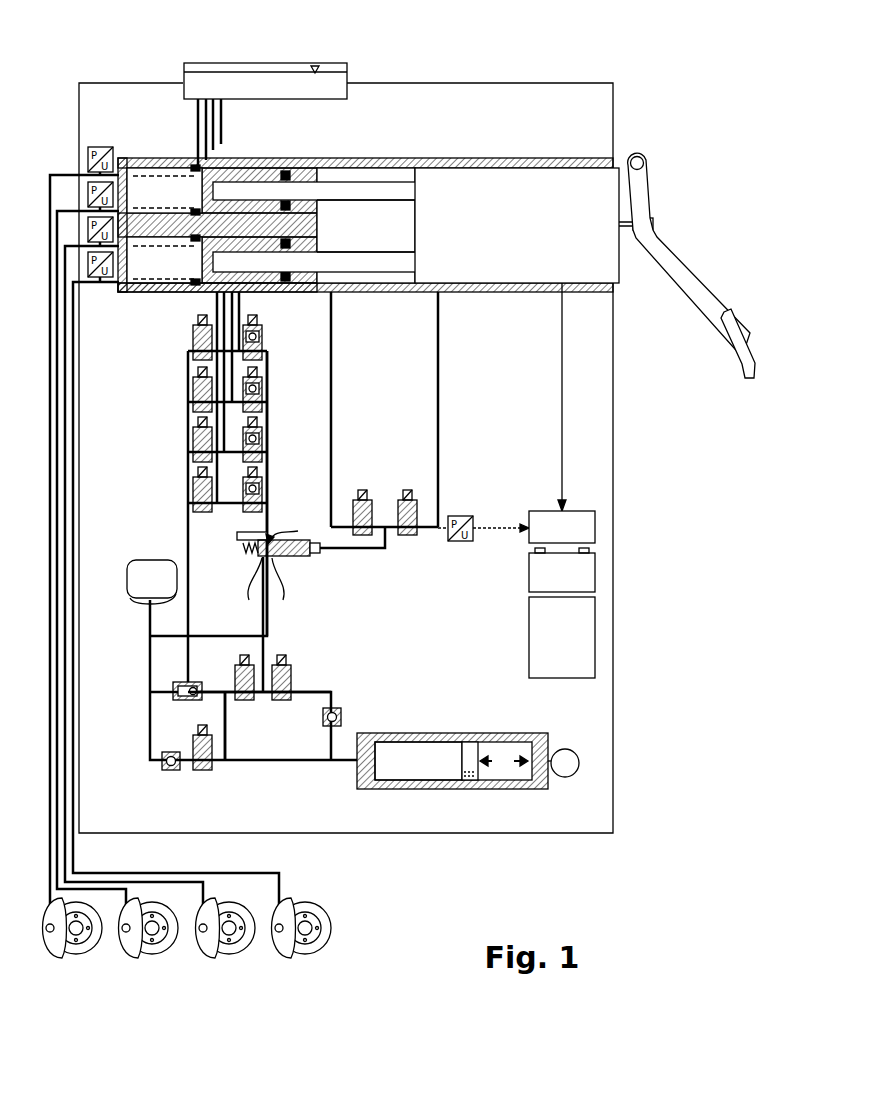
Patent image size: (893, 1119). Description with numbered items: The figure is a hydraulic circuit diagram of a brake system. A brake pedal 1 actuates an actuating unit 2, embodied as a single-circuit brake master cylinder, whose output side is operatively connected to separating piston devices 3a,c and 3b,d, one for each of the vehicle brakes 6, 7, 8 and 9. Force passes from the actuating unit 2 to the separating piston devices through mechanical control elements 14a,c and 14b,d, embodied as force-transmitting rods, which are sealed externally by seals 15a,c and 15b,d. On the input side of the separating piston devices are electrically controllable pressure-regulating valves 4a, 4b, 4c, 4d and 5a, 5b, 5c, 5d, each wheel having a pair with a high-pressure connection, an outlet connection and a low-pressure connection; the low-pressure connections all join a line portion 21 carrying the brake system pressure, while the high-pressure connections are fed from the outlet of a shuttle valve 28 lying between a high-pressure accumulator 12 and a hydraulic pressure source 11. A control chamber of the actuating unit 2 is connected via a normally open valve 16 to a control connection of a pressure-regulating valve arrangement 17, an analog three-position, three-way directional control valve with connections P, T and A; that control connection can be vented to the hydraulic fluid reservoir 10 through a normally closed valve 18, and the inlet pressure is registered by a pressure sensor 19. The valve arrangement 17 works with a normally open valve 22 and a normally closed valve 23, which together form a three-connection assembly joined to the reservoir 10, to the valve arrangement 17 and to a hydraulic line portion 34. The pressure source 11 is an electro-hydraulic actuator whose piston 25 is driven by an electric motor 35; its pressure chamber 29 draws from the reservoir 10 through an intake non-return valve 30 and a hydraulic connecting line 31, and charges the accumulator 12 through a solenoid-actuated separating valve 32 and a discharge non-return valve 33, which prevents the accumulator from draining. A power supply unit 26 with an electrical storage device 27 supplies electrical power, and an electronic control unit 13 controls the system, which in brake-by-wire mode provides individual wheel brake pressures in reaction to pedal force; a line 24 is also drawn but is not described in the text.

The brake pedal 1 is at (676, 270).
The actuating unit 2 is at (523, 195).
The separating piston devices 3a,c is at (244, 150).
The separating piston devices 3b,d is at (243, 300).
The pressure-regulating valve 4a is at (192, 351).
The pressure-regulating valve 4b is at (192, 401).
The pressure-regulating valve 4c is at (192, 451).
The pressure-regulating valve 4d is at (192, 502).
The pressure-regulating valve 5a is at (263, 351).
The pressure-regulating valve 5b is at (263, 401).
The pressure-regulating valve 5c is at (263, 451).
The pressure-regulating valve 5d is at (263, 502).
The vehicle brake 6 is at (53, 958).
The vehicle brake 7 is at (129, 958).
The vehicle brake 8 is at (206, 958).
The vehicle brake 9 is at (282, 958).
The hydraulic fluid reservoir 10 is at (257, 80).
The hydraulic pressure source 11 is at (500, 728).
The high-pressure accumulator 12 is at (134, 571).
The electronic control unit 13 is at (596, 522).
The mechanical control elements 14a,c is at (380, 190).
The mechanical control elements 14b,d is at (380, 262).
The seals 15a,c is at (317, 210).
The seals 15b,d is at (317, 234).
The normally open 2/2-way directional control valve 16 is at (406, 537).
The pressure-regulating valve arrangement 17 is at (301, 562).
The normally closed 2/2-way directional control valve 18 is at (371, 513).
The pressure sensor 19 is at (462, 542).
The line portion 21 is at (270, 376).
The normally open 2/2-way directional control valve 22 is at (282, 702).
The normally closed 2/2-way directional control valve 23 is at (245, 702).
The hydraulic line 24 is at (235, 685).
The piston 25 is at (473, 748).
The power supply unit 26 is at (596, 640).
The electrical storage device 27 is at (596, 575).
The shuttle valve 28 is at (188, 702).
The pressure chamber 29 is at (420, 748).
The intake non-return valve 30 is at (343, 712).
The hydraulic connecting line 31 is at (334, 379).
The separating valve 32 is at (203, 772).
The discharge non-return valve 33 is at (170, 772).
The hydraulic line portion 34 is at (228, 738).
The electric motor 35 is at (441, 379).